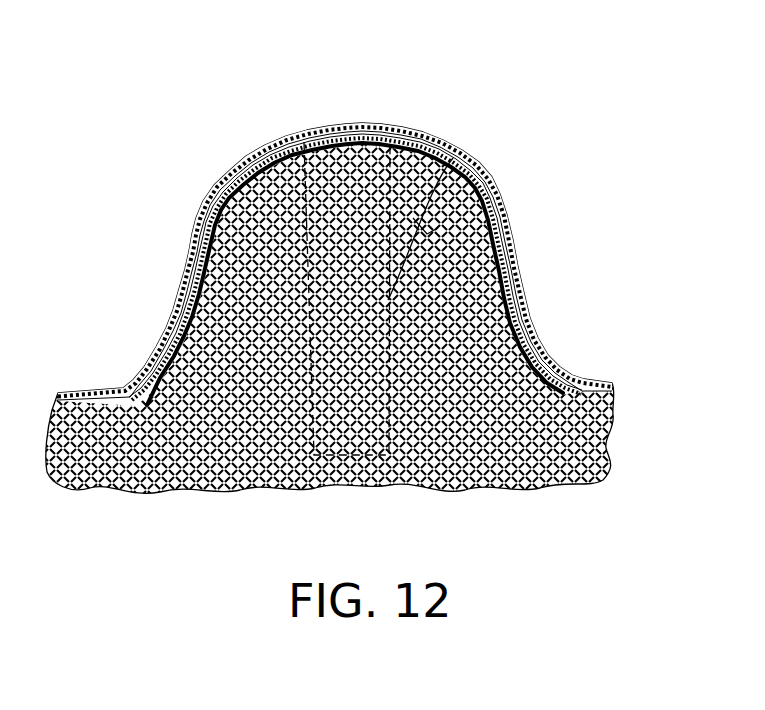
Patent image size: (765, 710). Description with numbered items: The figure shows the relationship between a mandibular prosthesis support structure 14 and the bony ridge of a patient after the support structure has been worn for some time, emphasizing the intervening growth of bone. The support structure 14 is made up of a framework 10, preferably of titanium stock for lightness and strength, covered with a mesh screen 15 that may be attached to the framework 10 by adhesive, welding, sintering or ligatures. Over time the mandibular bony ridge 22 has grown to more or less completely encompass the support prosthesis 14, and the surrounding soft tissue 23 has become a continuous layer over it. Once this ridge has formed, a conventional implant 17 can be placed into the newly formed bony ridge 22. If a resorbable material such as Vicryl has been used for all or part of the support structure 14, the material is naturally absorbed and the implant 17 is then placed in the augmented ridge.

The framework 10 is at (240, 176).
The prosthesis support structure 14 is at (160, 210).
The mesh screen 15 is at (453, 158).
The conventional implant 17 is at (505, 235).
The mandibular bony ridge 22 is at (489, 190).
The soft tissue 23 is at (180, 300).